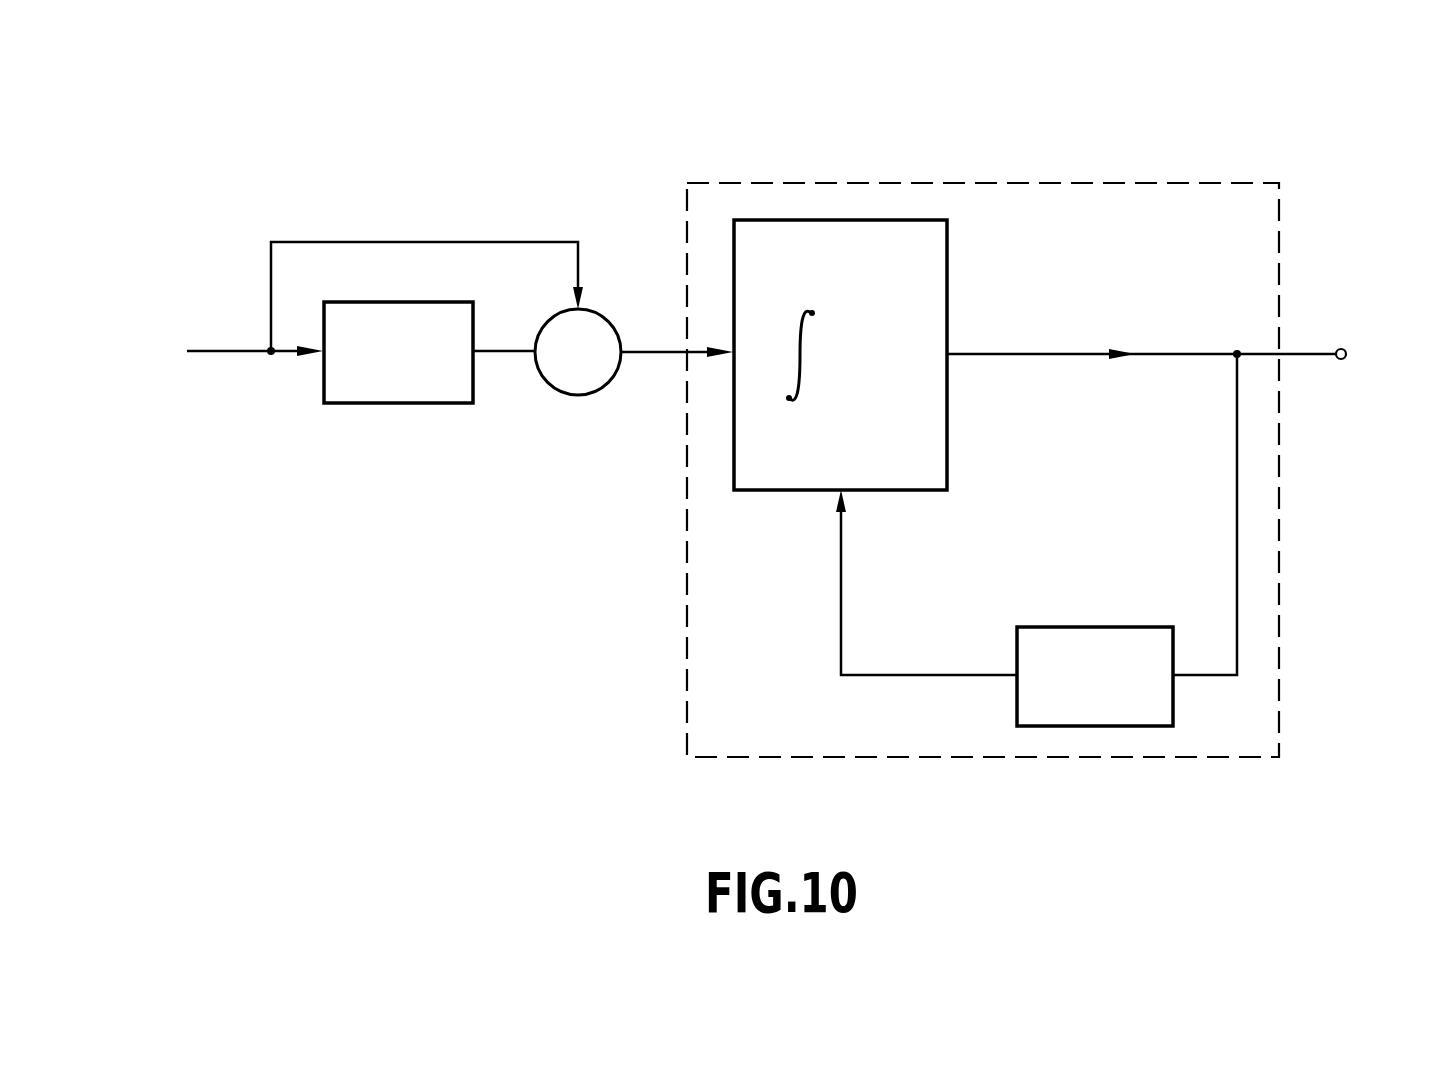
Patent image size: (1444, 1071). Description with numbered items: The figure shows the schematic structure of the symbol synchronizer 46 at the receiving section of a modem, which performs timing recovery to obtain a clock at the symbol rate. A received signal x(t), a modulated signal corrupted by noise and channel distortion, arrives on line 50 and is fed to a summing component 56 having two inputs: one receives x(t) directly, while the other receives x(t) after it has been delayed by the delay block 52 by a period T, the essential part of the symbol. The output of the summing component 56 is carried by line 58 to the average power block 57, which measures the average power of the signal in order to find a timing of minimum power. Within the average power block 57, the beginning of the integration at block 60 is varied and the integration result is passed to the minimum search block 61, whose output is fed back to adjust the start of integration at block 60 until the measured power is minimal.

The symbol synchronizer 46 is at (612, 187).
The line 50 is at (219, 353).
The delay block 52 is at (360, 404).
The summing component 56 is at (588, 395).
The average power block 57 is at (1097, 183).
The line 58 is at (642, 352).
The integration block 60 is at (947, 296).
The minimum search block 61 is at (1097, 627).